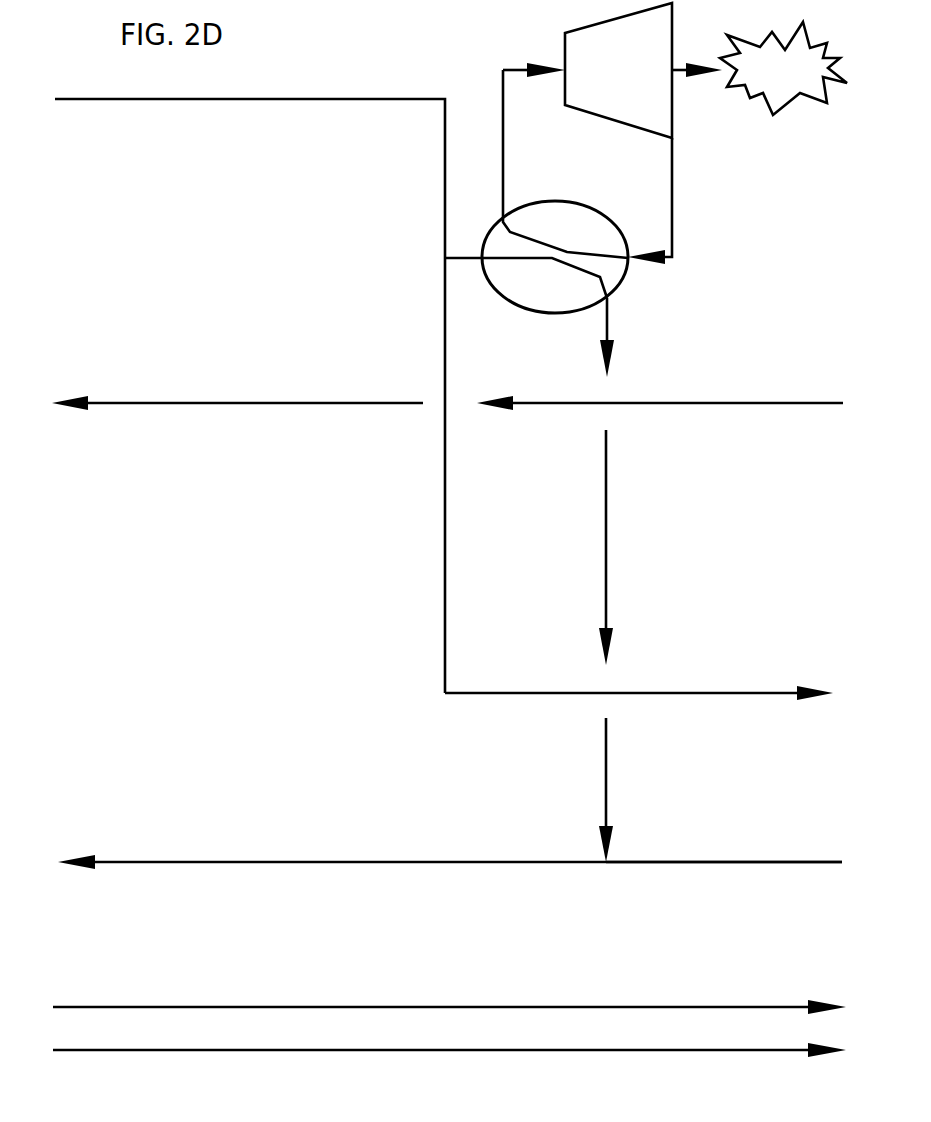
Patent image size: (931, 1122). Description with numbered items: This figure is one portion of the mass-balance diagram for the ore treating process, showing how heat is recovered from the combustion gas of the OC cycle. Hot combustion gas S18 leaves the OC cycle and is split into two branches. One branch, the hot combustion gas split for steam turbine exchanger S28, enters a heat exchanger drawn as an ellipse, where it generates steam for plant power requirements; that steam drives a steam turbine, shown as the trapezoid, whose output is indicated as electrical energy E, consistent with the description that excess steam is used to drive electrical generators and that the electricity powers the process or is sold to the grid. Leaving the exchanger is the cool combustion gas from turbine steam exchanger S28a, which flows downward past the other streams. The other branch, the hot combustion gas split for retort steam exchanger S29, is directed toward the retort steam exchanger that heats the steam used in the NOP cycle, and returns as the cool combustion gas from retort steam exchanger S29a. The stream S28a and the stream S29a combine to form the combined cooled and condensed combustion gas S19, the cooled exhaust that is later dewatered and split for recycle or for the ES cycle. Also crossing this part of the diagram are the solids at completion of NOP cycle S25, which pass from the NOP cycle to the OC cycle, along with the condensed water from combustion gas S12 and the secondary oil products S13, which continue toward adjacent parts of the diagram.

The hot combustion gas S18 is at (250, 396).
The hot combustion gas split for steam turbine exchanger S28 is at (526, 278).
The cool combustion gas from turbine steam exchanger S28a is at (633, 580).
The solids at completion of NOP cycle S25 is at (447, 416).
The hot combustion gas split for retort steam exchanger S29 is at (639, 706).
The combined cooled and condensed combustion gas S19 is at (450, 871).
The cool combustion gas from retort steam exchanger S29a is at (724, 878).
The condensed water from combustion gas S12 is at (449, 997).
The secondary oil products S13 is at (449, 1062).
The electrical energy output E is at (783, 68).